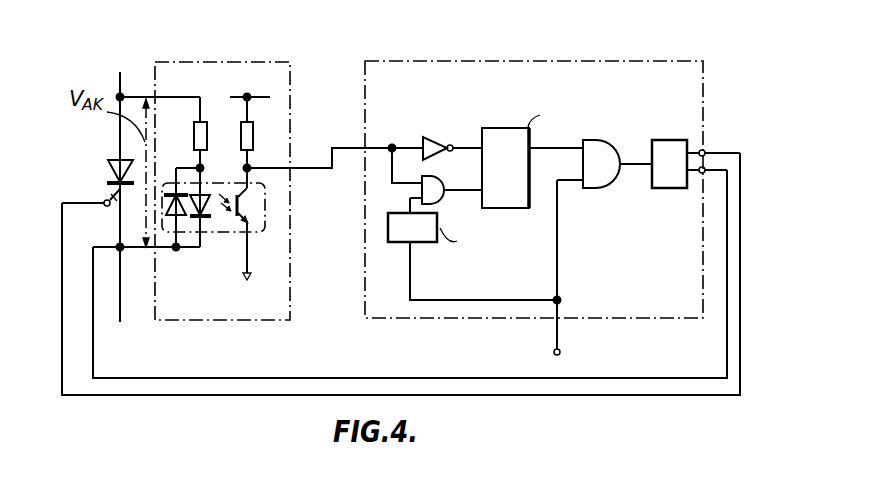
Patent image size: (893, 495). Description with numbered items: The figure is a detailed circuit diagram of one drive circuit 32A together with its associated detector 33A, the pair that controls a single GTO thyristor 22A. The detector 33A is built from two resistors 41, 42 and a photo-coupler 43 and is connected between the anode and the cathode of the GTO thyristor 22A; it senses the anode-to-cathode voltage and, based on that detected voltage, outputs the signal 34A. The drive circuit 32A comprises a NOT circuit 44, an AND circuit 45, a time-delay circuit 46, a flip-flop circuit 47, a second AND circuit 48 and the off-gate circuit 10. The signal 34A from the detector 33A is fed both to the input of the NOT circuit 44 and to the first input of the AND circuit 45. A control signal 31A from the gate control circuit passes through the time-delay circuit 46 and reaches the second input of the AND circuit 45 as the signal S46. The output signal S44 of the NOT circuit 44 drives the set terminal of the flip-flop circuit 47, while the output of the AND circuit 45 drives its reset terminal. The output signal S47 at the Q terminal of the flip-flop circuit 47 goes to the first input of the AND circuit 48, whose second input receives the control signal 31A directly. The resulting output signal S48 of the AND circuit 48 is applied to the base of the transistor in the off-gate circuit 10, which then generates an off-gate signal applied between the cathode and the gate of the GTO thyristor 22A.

The off-gate circuit 10 is at (673, 136).
The GTO thyristor 22A is at (117, 173).
The control signal 31A is at (537, 353).
The drive circuit 32A is at (547, 52).
The detector 33A is at (245, 52).
The signal 34A is at (312, 167).
The resistor 41 is at (195, 140).
The resistor 42 is at (253, 138).
The photo-coupler 43 is at (217, 233).
The NOT circuit 44 is at (427, 140).
The AND circuit 45 is at (420, 190).
The time-delay circuit 46 is at (390, 228).
The flip-flop circuit 47 is at (512, 128).
The AND circuit 48 is at (605, 153).
The output signal of NOT circuit S44 is at (467, 147).
The signal S46 is at (408, 203).
The output signal of flip-flop circuit S47 is at (568, 151).
The output signal of AND circuit S48 is at (638, 167).